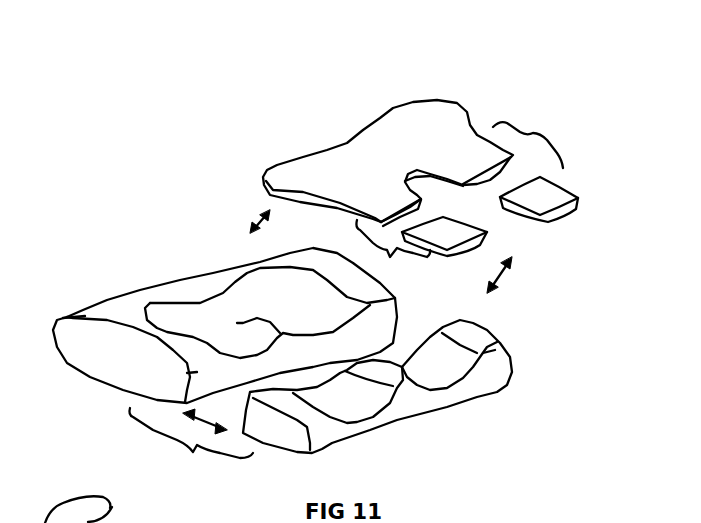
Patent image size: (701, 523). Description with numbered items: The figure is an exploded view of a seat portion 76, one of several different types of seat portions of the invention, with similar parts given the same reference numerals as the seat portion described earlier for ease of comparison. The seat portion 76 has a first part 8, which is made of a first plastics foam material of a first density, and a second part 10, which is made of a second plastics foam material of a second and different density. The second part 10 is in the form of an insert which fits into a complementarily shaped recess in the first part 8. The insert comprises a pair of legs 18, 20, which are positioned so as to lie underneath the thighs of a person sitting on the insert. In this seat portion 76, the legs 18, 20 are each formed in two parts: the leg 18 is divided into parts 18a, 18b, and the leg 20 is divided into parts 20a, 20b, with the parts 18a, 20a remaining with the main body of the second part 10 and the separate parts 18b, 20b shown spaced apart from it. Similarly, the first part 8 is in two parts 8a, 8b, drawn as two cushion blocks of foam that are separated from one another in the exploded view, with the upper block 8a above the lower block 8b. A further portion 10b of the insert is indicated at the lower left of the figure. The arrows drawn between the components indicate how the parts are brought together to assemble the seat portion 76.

The first part 8 is at (193, 452).
The first part section 8a is at (183, 282).
The first part section 8b is at (447, 403).
The second part 10 is at (395, 106).
The pad lower portion 10b is at (77, 513).
The leg 18 is at (533, 133).
The leg part 18a is at (458, 163).
The leg part 18b is at (539, 199).
The leg 20 is at (390, 258).
The leg part 20a is at (384, 202).
The leg part 20b is at (444, 236).
The seat portion 76 is at (628, 167).